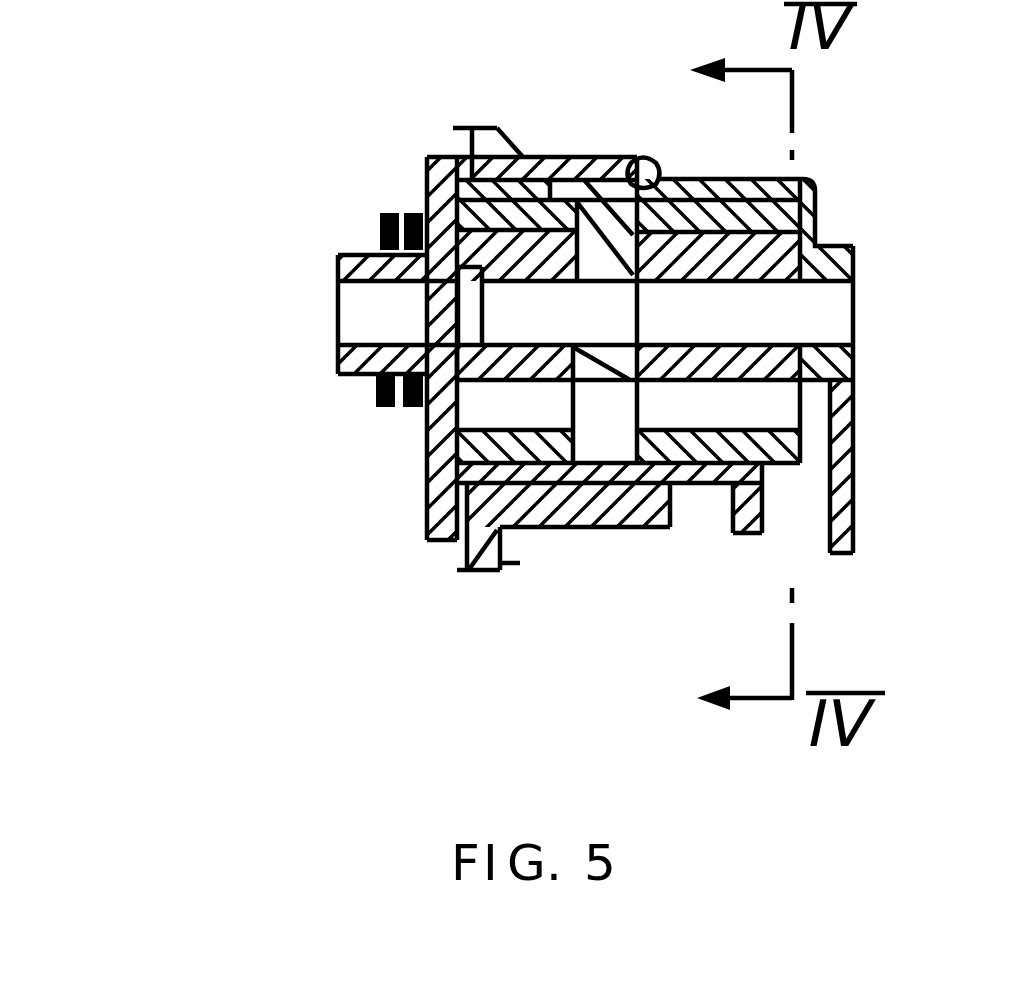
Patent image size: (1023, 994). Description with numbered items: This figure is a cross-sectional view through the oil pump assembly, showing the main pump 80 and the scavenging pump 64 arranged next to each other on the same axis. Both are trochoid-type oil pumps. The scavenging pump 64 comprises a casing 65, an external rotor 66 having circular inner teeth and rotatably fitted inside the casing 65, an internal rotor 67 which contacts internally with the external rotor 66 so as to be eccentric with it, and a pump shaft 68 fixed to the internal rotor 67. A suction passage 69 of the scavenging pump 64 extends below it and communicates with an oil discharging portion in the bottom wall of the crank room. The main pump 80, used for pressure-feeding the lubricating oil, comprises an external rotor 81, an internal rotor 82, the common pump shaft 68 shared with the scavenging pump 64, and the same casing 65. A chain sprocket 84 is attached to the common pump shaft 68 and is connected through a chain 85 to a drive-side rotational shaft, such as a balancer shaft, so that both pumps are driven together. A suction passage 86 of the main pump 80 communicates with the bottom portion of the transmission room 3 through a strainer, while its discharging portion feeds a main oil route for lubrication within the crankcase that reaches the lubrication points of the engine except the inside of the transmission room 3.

The transmission room 3 is at (555, 688).
The scavenging pump 64 is at (840, 422).
The casing 65 is at (638, 160).
The external rotor 66 is at (815, 240).
The internal rotor 67 is at (815, 247).
The pump shaft 68 is at (834, 315).
The suction passage 69 is at (807, 503).
The main pump 80 is at (405, 189).
The external rotor 81 is at (523, 185).
The internal rotor 82 is at (507, 383).
The chain sprocket 84 is at (336, 376).
The chain 85 is at (415, 403).
The suction passage 86 is at (628, 382).